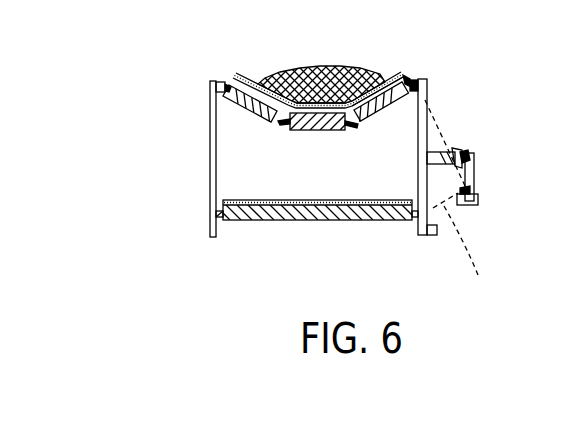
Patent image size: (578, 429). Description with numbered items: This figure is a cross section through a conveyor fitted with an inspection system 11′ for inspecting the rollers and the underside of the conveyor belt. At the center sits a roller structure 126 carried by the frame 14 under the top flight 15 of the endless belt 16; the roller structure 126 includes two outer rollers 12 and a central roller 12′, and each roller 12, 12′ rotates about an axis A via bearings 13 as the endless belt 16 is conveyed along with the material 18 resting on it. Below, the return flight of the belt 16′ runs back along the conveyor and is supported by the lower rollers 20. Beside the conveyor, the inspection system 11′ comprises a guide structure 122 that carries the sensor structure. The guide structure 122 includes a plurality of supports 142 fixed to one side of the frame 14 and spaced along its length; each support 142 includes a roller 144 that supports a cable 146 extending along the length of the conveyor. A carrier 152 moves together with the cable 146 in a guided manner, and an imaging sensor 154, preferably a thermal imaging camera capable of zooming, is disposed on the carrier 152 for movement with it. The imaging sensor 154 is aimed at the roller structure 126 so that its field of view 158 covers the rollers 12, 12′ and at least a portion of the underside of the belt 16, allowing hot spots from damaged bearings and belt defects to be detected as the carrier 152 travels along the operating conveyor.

The inspection system 11′ is at (480, 208).
The outer roller 12 is at (250, 103).
The central roller 12′ is at (297, 120).
The bearings 13 is at (352, 124).
The frame 14 is at (210, 160).
The top flight 15 is at (385, 75).
The endless belt 16 is at (245, 76).
The return flight of the belt 16′ is at (292, 203).
The material 18 is at (325, 70).
The lower rollers 20 is at (216, 219).
The axis A is at (425, 80).
The guide structure 122 is at (457, 140).
The roller structure 126 is at (363, 132).
The support 142 is at (442, 150).
The roller 144 is at (470, 166).
The cable 146 is at (463, 152).
The carrier 152 is at (478, 200).
The imaging sensor 154 is at (475, 190).
The field of view 158 is at (475, 249).